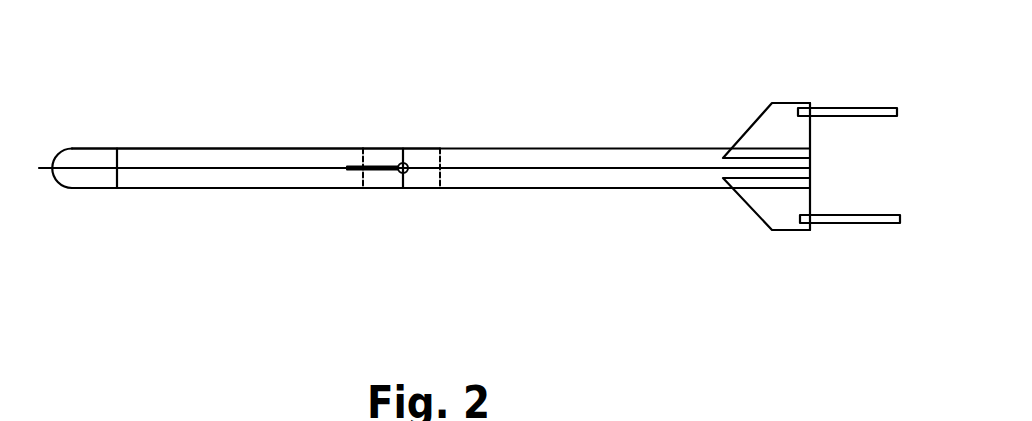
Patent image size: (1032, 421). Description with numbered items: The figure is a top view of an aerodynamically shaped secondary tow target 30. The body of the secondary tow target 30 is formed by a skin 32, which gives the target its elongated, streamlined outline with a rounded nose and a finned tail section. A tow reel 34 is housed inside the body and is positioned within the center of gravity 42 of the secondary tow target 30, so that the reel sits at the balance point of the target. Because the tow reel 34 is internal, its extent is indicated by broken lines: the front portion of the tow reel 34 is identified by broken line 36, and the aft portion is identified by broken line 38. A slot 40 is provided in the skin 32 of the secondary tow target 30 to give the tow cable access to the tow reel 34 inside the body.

The secondary tow target 30 is at (563, 148).
The skin 32 is at (168, 158).
The tow reel 34 is at (422, 155).
The broken line 36 is at (365, 179).
The broken line 38 is at (442, 177).
The slot 40 is at (362, 150).
The center of gravity 42 is at (403, 178).